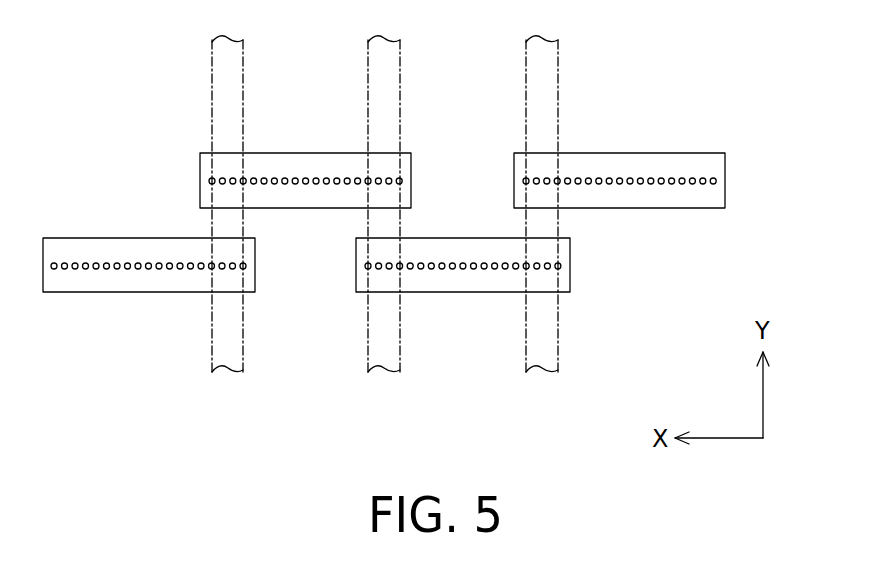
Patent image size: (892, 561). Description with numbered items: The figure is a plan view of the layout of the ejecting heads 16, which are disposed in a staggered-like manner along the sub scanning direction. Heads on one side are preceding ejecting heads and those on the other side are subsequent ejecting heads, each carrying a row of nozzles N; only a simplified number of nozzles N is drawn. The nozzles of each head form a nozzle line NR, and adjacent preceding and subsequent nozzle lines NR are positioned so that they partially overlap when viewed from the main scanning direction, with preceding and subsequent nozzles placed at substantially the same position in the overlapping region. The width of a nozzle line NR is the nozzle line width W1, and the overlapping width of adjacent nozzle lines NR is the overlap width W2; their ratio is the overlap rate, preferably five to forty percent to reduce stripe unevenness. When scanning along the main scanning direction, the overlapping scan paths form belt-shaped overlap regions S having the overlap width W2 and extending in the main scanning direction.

The ejecting head 16 is at (200, 158).
The nozzle N is at (107, 269).
The nozzle line NR is at (259, 269).
The overlap region S is at (243, 57).
The nozzle line width W1 is at (400, 107).
The overlap width W2 is at (272, 140).